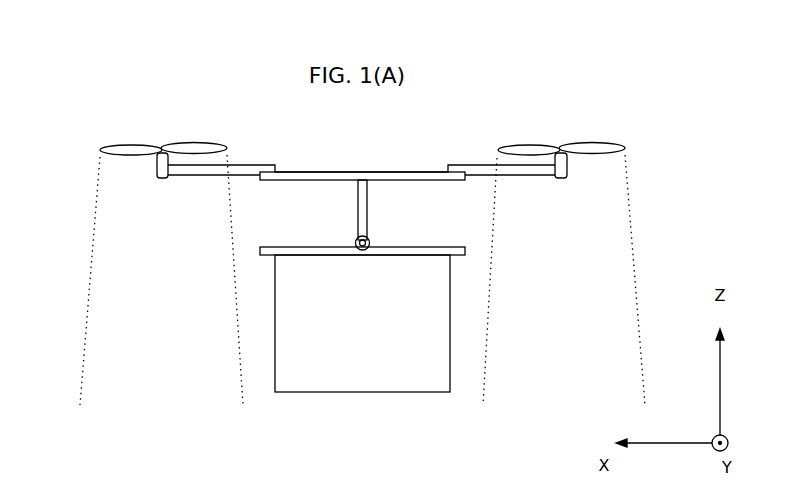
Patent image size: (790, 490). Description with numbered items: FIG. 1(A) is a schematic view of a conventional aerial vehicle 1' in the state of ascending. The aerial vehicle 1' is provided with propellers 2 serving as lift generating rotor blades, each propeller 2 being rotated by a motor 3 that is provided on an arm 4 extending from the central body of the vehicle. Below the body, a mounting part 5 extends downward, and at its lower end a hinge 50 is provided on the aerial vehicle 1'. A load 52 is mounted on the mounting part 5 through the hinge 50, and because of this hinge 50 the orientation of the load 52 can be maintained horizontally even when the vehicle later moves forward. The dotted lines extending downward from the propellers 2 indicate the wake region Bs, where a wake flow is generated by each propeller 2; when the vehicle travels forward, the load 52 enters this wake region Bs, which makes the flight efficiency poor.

The aerial vehicle 1' is at (497, 75).
The propeller 2 is at (123, 152).
The motor 3 is at (162, 179).
The arm 4 is at (308, 173).
The mounting part 5 is at (368, 212).
The hinge 50 is at (370, 243).
The load 52 is at (362, 364).
The wake region Bs is at (110, 243).